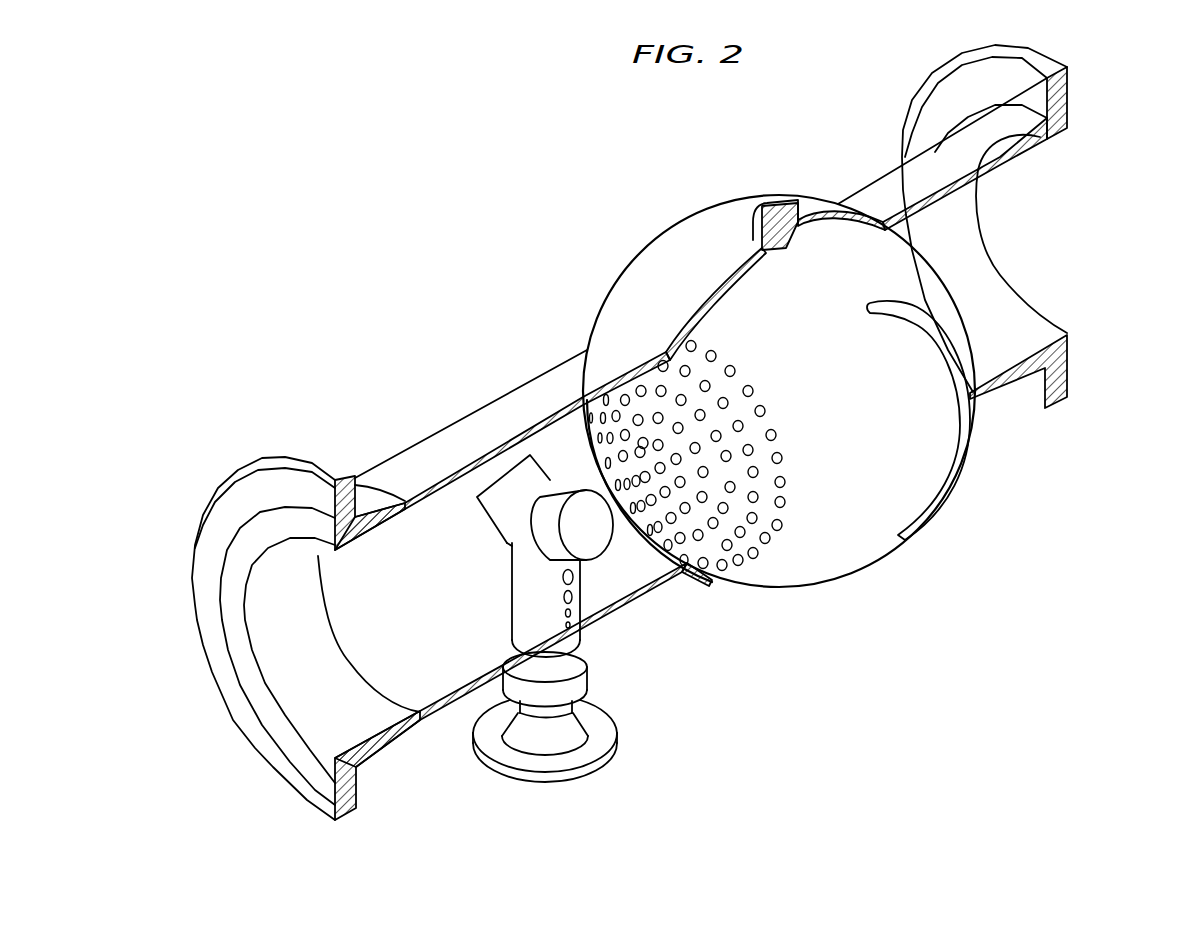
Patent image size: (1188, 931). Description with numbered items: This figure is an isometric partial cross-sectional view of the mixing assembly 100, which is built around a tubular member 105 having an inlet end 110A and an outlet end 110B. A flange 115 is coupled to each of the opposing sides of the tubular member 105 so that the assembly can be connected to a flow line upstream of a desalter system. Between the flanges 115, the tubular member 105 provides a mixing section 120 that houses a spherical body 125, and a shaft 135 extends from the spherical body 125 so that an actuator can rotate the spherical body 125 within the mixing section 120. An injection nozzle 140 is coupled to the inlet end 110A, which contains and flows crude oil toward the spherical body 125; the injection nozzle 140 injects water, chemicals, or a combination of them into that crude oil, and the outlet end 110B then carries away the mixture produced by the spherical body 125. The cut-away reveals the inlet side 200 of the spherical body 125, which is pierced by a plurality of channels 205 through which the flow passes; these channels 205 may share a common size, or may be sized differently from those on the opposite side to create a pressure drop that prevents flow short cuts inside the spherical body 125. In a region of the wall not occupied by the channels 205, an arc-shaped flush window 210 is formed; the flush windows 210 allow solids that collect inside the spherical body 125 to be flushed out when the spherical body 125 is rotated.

The mixing assembly 100 is at (557, 226).
The tubular member 105 is at (406, 436).
The inlet end 110A is at (453, 697).
The outlet end 110B is at (987, 390).
The flange 115 is at (322, 800).
The mixing section 120 is at (720, 187).
The spherical body 125 is at (796, 607).
The shaft 135 is at (778, 204).
The injection nozzle 140 is at (598, 783).
The inlet side 200 is at (683, 585).
The channels 205 is at (777, 434).
The flush windows 210 is at (948, 487).